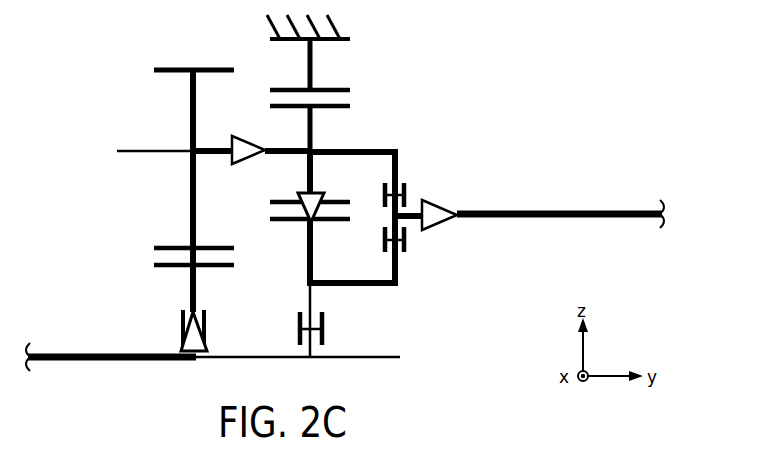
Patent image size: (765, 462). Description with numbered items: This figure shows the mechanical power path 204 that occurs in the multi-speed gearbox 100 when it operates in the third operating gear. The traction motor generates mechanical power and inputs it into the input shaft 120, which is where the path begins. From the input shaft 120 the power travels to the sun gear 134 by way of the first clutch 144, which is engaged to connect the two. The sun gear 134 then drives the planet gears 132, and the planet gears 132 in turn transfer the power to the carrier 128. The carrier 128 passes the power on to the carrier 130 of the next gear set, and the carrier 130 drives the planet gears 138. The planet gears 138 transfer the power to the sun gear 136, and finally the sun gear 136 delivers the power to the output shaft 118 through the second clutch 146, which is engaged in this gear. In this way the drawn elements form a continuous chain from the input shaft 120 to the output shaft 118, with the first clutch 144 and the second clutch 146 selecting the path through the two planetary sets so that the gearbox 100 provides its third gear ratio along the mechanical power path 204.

The multi-speed gearbox 100 is at (566, 82).
The output shaft 118 is at (488, 198).
The input shaft 120 is at (253, 355).
The carrier 128 is at (148, 149).
The carrier 130 is at (430, 124).
The planet gears 132 is at (168, 68).
The sun gear 134 is at (165, 265).
The sun gear 136 is at (288, 218).
The planet gears 138 is at (344, 100).
The first clutch 144 is at (158, 336).
The second clutch 146 is at (428, 240).
The mechanical power path 204 is at (51, 353).